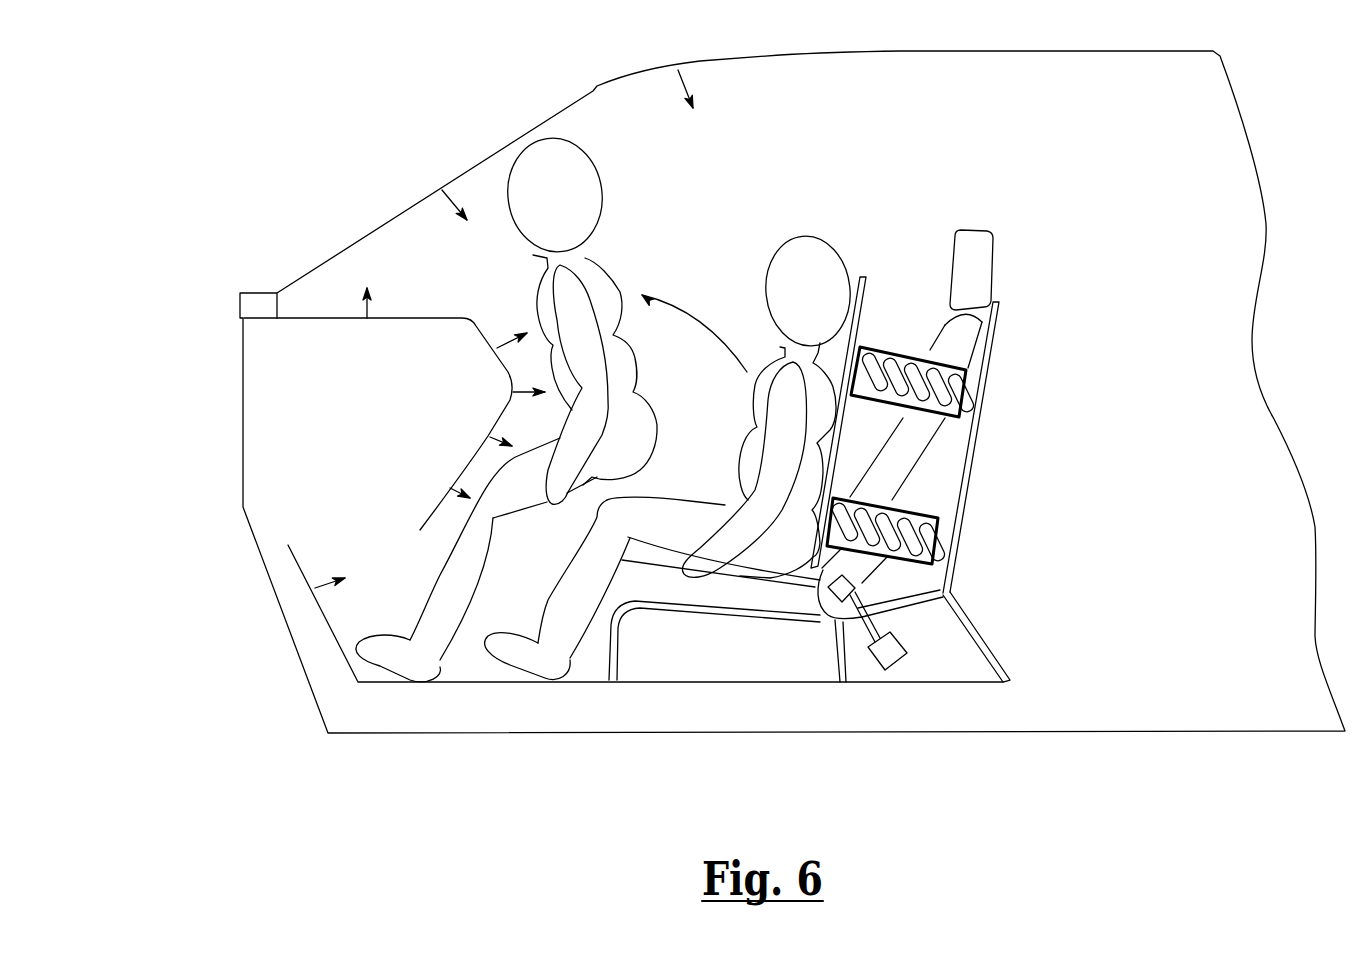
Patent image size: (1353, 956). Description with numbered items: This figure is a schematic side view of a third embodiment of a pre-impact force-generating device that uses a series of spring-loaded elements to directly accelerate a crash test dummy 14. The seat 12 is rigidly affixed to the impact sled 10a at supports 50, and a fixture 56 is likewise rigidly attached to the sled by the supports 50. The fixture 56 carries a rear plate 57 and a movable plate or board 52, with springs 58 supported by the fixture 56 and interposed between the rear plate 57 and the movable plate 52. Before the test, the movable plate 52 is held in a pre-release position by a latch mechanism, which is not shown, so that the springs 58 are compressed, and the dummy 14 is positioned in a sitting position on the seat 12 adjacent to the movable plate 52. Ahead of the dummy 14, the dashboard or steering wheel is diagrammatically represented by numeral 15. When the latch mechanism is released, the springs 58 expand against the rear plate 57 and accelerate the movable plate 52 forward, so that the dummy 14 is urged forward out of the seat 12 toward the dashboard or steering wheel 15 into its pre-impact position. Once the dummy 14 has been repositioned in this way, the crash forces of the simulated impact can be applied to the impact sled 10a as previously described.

The test sled 10a is at (303, 275).
The dashboard or steering wheel 15 is at (477, 330).
The dummy 14 is at (600, 203).
The movable plate 52 is at (868, 303).
The seat 12 is at (960, 343).
The springs 58 is at (987, 392).
The rear plate 57 is at (968, 478).
The fixture 56 is at (950, 577).
The supports 50 is at (617, 660).